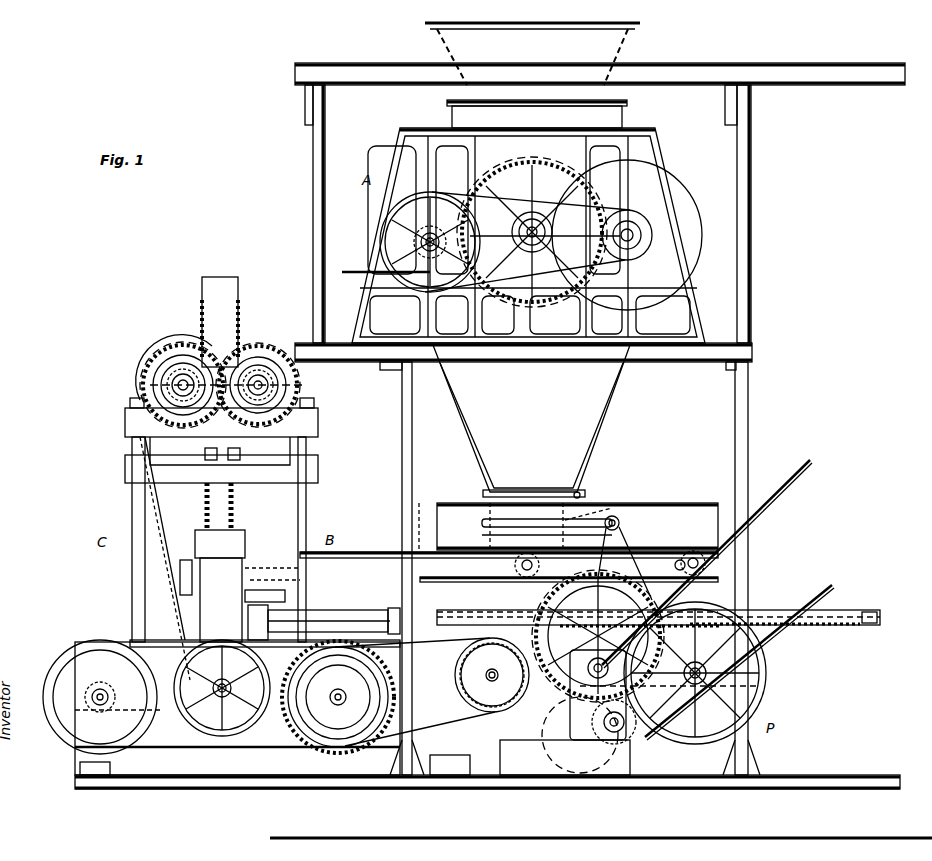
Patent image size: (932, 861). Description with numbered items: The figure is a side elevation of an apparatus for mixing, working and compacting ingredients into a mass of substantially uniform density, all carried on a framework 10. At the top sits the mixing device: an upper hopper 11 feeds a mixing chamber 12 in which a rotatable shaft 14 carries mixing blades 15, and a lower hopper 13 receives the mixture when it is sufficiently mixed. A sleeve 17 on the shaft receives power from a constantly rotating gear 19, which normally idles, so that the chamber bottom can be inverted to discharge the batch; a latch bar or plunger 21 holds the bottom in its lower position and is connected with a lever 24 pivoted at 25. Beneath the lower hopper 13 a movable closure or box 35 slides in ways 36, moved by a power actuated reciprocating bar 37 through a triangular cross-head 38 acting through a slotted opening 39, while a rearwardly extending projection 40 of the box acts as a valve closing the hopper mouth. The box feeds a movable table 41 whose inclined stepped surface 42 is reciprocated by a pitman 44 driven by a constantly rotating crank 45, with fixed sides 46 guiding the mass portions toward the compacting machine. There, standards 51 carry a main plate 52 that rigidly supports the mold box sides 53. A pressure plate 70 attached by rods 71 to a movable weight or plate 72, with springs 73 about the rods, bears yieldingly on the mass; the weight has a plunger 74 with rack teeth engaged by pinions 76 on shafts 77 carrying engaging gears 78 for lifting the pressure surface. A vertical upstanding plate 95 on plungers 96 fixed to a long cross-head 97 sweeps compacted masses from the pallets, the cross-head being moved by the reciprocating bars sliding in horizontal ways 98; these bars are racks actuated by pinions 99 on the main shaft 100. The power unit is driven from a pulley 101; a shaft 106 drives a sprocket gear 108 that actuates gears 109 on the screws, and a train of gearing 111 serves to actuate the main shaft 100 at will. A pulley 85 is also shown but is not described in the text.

The framework 10 is at (401, 437).
The upper hopper 11 is at (606, 46).
The mixing chamber 12 is at (540, 181).
The lower hopper 13 is at (536, 466).
The rotatable shaft 14 is at (548, 220).
The mixing blades 15 is at (240, 302).
The sleeve 17 is at (532, 250).
The constantly rotating gear 19 is at (470, 180).
The latch bar or plunger 21 is at (532, 212).
The lever 24 is at (507, 204).
The lever pivot 25 is at (553, 278).
The movable closure or box 35 is at (482, 530).
The ways 36 is at (442, 510).
The reciprocating bar 37 is at (874, 612).
The triangular cross-head 38 is at (626, 524).
The slotted opening 39 is at (481, 521).
The rearwardly extending projection 40 is at (590, 512).
The movable table 41 is at (417, 526).
The inclined stepped surface 42 is at (268, 560).
The pitman 44 is at (533, 554).
The constantly rotating crank 45 is at (690, 552).
The fixed sides 46 is at (272, 557).
The standards 51 is at (131, 575).
The main plate 52 is at (132, 642).
The mold box sides 53 is at (185, 607).
The pressure plate 70 is at (195, 549).
The rods 71 is at (205, 449).
The movable weight or plate 72 is at (125, 473).
The springs 73 is at (200, 498).
The plunger 74 is at (220, 282).
The pinions 76 is at (238, 384).
The shafts 77 is at (258, 380).
The engaging gears 78 is at (270, 358).
The pulley 85 is at (245, 725).
The vertical upstanding plate 95 is at (248, 618).
The plungers 96 is at (330, 618).
The cross-head 97 is at (390, 634).
The horizontal ways 98 is at (768, 610).
The pinions 99 is at (566, 610).
The main shaft 100 is at (590, 658).
The pulley 101 is at (760, 638).
The shaft 106 is at (478, 686).
The sprocket gear 108 is at (458, 678).
The gears 109 is at (70, 660).
The train of gearing 111 is at (540, 602).